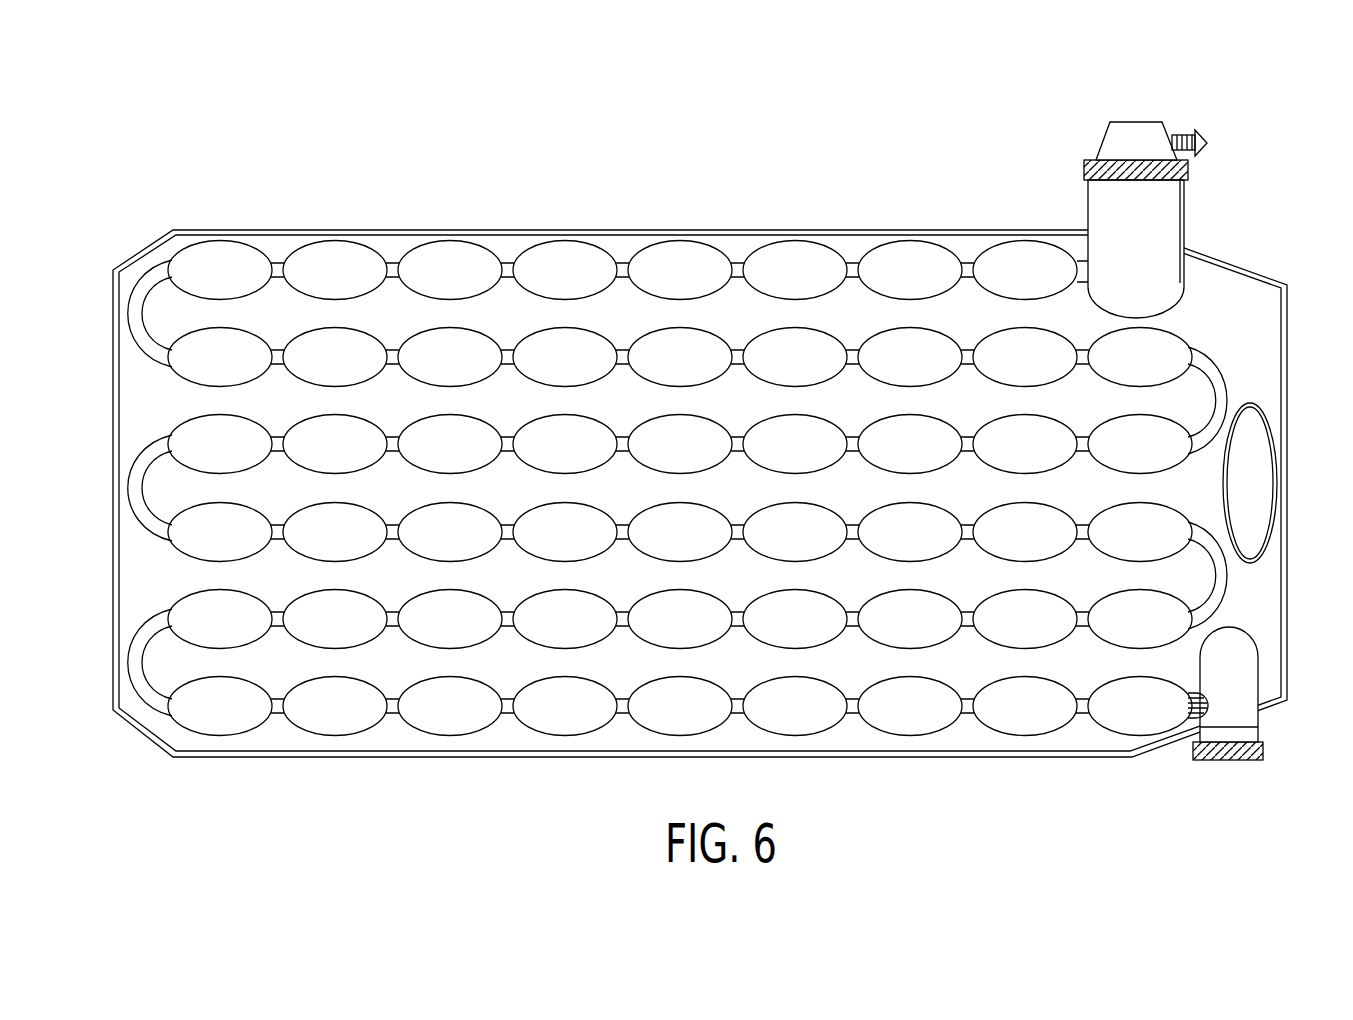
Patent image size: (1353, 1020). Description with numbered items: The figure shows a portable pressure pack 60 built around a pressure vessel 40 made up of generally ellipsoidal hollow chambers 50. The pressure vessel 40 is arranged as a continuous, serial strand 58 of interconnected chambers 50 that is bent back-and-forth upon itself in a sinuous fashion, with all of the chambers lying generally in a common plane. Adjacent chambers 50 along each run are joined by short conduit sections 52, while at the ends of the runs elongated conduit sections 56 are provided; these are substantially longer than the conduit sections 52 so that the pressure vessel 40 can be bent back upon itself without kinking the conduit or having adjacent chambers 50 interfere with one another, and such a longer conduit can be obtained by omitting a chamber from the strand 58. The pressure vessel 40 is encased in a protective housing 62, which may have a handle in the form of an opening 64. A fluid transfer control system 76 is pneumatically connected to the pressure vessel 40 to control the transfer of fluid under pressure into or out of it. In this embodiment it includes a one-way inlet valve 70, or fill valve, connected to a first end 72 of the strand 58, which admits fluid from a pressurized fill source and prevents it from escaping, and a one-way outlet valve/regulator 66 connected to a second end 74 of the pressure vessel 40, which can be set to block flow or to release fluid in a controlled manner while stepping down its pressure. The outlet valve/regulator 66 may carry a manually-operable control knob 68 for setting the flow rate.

The pressure vessel 40 is at (820, 231).
The hollow chambers 50 is at (680, 241).
The conduit sections 52 is at (507, 262).
The elongated conduit sections 56 is at (163, 266).
The strand 58 is at (1180, 334).
The pressure pack 60 is at (729, 449).
The protective housing 62 is at (1283, 281).
The opening 64 is at (1266, 483).
The outlet valve/regulator 66 is at (1192, 217).
The control knob 68 is at (1206, 125).
The one-way inlet valve 70 is at (1265, 737).
The first end 72 is at (1197, 733).
The second end 74 is at (1079, 259).
The fluid transfer control system 76 is at (1153, 97).